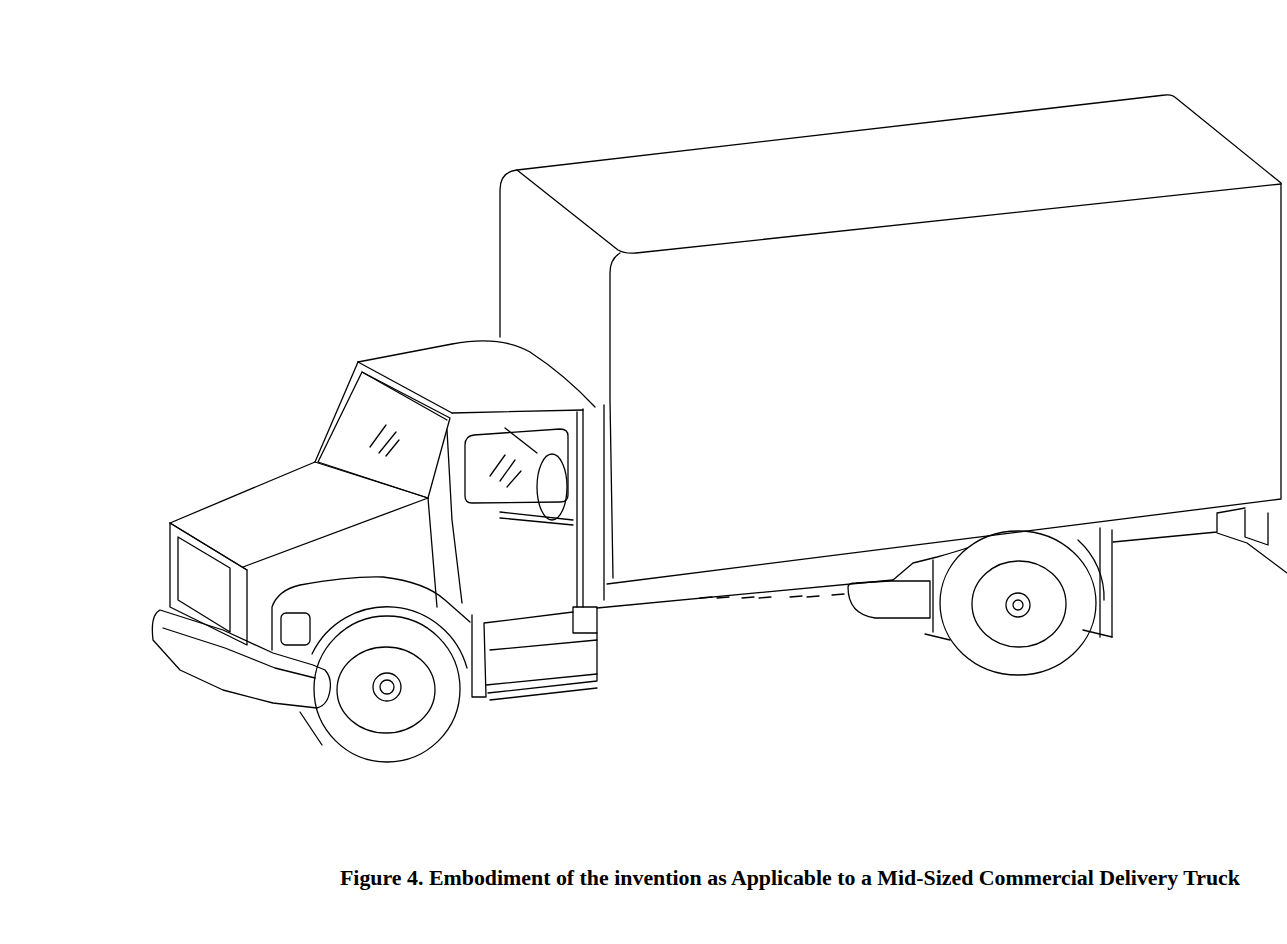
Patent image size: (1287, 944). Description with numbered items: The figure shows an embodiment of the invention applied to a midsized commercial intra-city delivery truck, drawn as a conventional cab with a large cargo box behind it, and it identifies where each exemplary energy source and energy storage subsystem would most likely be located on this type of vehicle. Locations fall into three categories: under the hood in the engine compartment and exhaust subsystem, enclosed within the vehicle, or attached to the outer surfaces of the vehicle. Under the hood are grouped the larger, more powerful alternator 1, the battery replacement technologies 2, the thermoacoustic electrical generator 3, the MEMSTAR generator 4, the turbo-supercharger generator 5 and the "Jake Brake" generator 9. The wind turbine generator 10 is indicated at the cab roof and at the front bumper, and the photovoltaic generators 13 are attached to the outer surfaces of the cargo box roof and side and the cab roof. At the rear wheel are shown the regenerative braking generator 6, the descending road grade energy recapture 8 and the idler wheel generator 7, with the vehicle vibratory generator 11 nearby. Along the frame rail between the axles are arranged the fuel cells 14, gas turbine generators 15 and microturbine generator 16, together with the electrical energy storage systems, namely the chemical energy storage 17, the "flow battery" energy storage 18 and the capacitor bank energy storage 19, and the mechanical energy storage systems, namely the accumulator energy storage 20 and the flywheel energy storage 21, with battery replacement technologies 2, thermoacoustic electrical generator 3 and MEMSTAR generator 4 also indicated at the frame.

The larger, more powerful alternator 1 is at (233, 530).
The battery replacement technologies 2 is at (245, 520).
The thermoacoustic electrical generator 3 is at (271, 538).
The MEMSTAR generator 4 is at (290, 520).
The turbo-supercharger generator 5 is at (313, 522).
The regenerative braking generator 6 is at (1015, 623).
The idler wheel generator 7 is at (948, 567).
The descending road grade energy recapture 8 is at (1065, 663).
The "Jake Brake" generator 9 is at (337, 522).
The wind turbine generator 10 is at (480, 390).
The vehicle vibratory generator 11 is at (1065, 530).
The photovoltaic generators 13 is at (937, 175).
The fuel cells 14 is at (706, 597).
The gas turbine generators 15 is at (723, 597).
The microturbine generator 16 is at (748, 598).
The chemical energy storage 17 is at (765, 598).
The "flow battery" energy storage 18 is at (796, 598).
The capacitor bank energy storage 19 is at (813, 598).
The accumulator energy storage 20 is at (838, 598).
The flywheel energy storage 21 is at (887, 587).